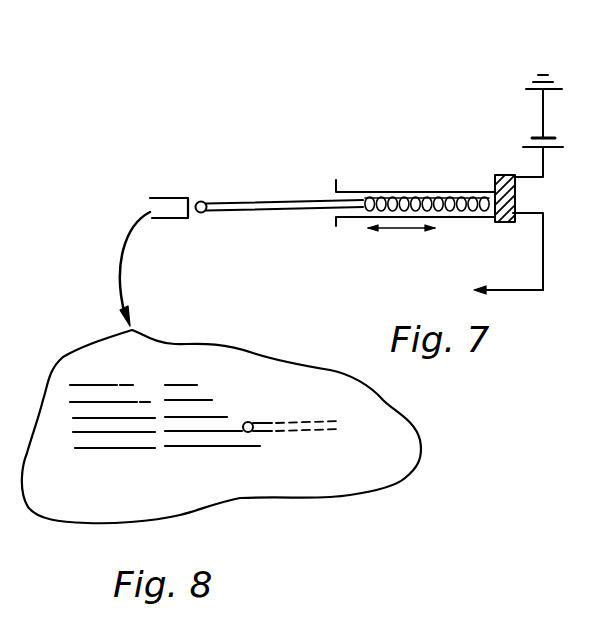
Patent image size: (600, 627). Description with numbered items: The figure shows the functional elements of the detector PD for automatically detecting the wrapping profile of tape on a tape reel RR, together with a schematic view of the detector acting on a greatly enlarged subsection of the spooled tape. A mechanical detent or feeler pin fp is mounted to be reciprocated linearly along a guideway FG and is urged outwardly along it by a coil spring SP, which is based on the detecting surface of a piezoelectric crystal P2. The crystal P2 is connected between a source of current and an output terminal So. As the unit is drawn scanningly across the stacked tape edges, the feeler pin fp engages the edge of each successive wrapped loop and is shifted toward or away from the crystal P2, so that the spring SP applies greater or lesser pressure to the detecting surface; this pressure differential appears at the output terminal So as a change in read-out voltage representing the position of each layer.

In FIG. 7, the detector PD is at (547, 70).
In FIG. 7, the tape reel RR is at (165, 190).
In FIG. 7, the feeler pin fp is at (275, 181).
In FIG. 8, the feeler pin fp is at (298, 430).
In FIG. 7, the coil spring SP is at (392, 195).
In FIG. 7, the piezoelectric crystal P2 is at (505, 182).
In FIG. 7, the guideway FG is at (467, 218).
In FIG. 7, the output terminal So is at (484, 291).